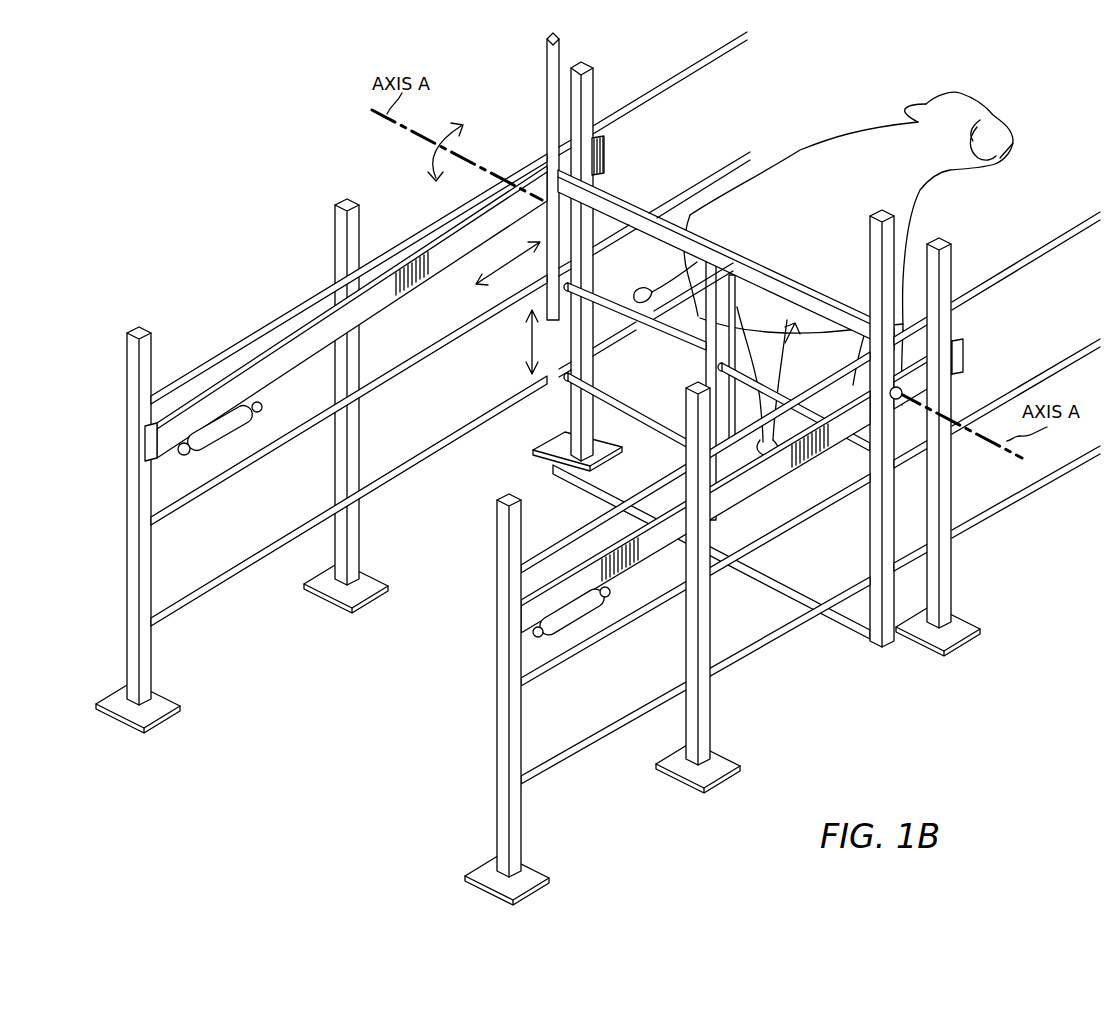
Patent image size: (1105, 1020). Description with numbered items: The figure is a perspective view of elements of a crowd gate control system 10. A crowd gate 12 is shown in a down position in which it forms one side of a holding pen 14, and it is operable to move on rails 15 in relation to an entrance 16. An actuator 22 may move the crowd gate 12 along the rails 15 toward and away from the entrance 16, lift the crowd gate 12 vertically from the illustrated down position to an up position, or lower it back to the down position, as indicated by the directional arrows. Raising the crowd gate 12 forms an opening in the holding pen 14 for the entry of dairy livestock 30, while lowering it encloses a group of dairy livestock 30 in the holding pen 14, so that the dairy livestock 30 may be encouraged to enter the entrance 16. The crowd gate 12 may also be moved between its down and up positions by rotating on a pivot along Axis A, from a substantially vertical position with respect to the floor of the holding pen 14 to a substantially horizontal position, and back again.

The crowd gate control system 10 is at (275, 134).
The crowd gate 12 is at (750, 262).
The holding pen 14 is at (257, 808).
The rails 15 is at (290, 345).
The entrance 16 is at (1036, 510).
The actuator 22 is at (207, 442).
The dairy livestock 30 is at (810, 165).